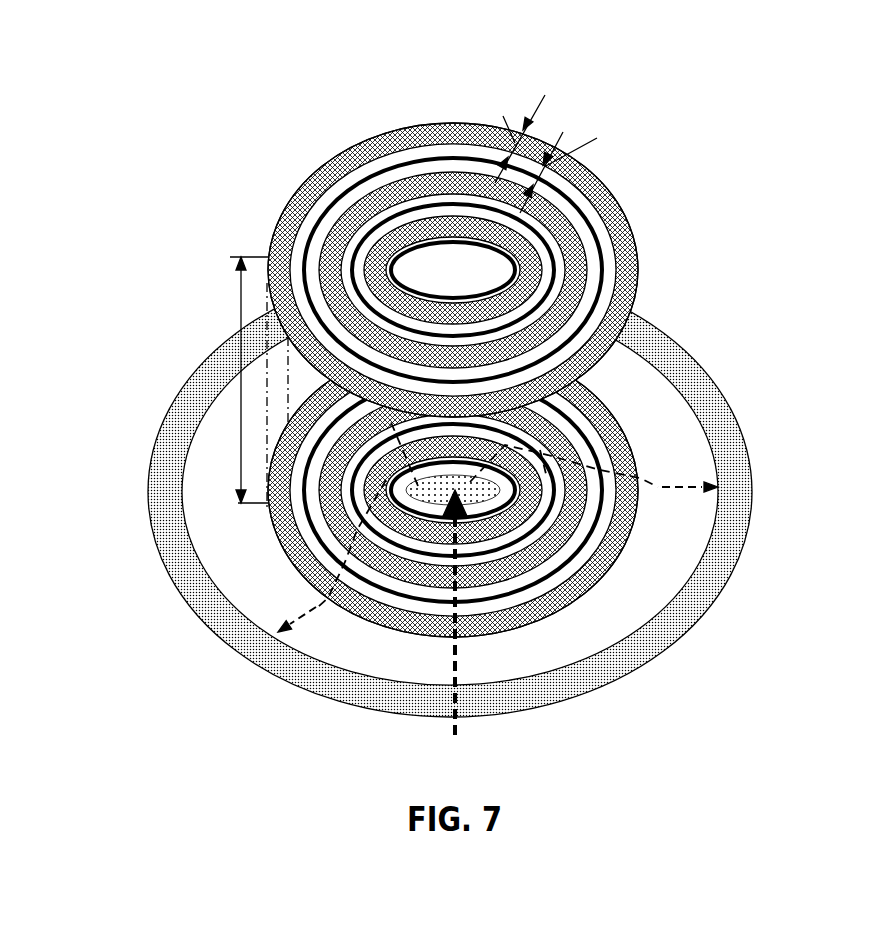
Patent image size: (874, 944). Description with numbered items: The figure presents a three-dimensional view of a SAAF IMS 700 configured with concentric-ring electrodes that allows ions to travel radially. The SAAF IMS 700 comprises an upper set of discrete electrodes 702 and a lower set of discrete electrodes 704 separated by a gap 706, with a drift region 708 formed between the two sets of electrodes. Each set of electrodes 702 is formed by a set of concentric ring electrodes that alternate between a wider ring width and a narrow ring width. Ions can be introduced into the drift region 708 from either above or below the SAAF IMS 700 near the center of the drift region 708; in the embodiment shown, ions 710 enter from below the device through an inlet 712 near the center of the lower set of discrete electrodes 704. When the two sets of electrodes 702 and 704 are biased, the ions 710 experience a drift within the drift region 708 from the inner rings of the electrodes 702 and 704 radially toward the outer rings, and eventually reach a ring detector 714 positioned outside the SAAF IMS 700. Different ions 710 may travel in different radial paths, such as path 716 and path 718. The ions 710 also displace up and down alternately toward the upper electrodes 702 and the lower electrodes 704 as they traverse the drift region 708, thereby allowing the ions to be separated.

The SAAF IMS 700 is at (450, 406).
The upper set of discrete electrodes 702 is at (588, 258).
The lower set of discrete electrodes 704 is at (578, 470).
The gap 706 is at (219, 378).
The drift region 708 is at (450, 450).
The ions 710 is at (455, 634).
The inlet 712 is at (478, 495).
The ring detector 714 is at (149, 472).
The path 716 is at (312, 613).
The path 718 is at (660, 487).